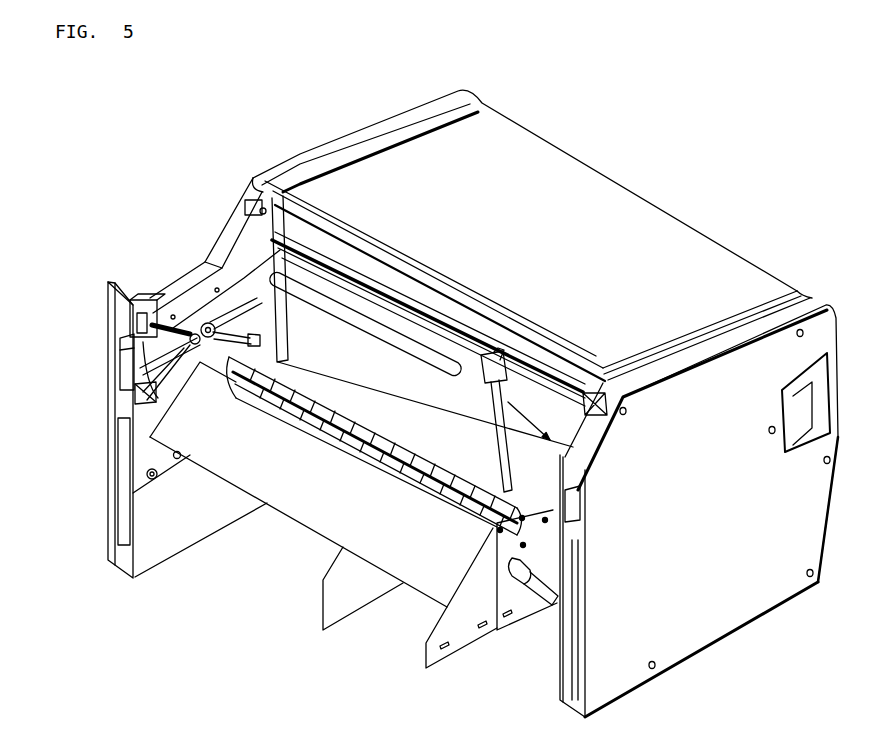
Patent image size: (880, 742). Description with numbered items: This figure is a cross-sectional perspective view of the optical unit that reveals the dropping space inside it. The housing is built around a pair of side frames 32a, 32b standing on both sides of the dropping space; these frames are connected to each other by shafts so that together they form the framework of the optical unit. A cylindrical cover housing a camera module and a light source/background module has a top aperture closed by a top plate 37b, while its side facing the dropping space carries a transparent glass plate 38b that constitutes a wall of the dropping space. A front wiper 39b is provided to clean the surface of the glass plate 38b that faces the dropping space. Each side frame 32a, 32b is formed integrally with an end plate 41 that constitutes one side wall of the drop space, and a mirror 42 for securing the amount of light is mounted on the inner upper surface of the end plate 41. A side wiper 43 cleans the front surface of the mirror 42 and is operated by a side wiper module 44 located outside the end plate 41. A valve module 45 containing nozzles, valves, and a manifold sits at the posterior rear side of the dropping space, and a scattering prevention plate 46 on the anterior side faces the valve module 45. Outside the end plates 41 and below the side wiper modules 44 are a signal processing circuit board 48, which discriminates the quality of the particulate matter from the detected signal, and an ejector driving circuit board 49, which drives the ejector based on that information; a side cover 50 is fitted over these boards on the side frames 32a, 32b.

The side frame 32a is at (347, 142).
The side frame 32b is at (787, 312).
The top plate 37b is at (603, 205).
The glass plate 38b is at (400, 397).
The front wiper 39b is at (500, 430).
The end plate 41 is at (143, 523).
The mirror 42 is at (130, 394).
The side wiper 43 is at (167, 360).
The side wiper module 44 is at (124, 373).
The valve module 45 is at (575, 475).
The scattering prevention plate 46 is at (427, 542).
The signal processing circuit board 48 is at (125, 450).
The ejector driving circuit board 49 is at (577, 653).
The side cover 50 is at (698, 605).